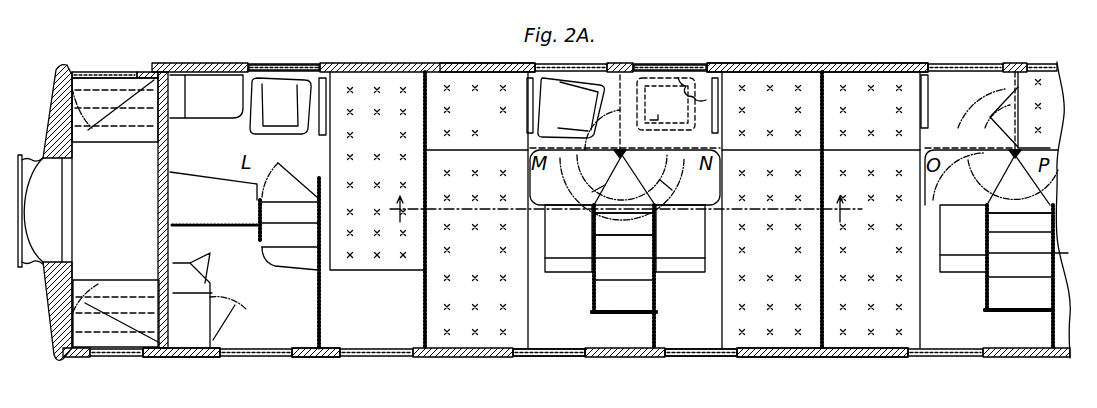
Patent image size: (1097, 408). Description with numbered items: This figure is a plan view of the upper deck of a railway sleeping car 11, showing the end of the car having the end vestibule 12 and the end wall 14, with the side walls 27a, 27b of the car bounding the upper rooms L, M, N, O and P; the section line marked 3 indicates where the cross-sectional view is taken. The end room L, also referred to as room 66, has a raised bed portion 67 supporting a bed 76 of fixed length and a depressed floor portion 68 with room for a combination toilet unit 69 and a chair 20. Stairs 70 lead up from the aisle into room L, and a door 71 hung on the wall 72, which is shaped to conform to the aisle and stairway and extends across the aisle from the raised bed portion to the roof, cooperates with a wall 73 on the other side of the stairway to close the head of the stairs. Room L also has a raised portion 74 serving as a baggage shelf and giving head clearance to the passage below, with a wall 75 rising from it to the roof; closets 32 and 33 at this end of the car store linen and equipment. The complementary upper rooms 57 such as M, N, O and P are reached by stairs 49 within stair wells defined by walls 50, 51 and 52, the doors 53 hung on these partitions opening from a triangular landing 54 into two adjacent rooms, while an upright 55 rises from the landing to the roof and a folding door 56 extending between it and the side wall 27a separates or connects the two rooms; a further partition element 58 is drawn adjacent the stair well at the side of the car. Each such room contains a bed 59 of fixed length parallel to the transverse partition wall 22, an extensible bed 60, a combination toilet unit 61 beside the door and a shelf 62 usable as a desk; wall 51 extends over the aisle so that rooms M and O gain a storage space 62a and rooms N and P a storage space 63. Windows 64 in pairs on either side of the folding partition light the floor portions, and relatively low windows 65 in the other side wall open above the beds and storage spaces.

The car 11 is at (435, 58).
The end vestibule 12 is at (116, 212).
The end wall 14 is at (160, 165).
The chair 20 is at (654, 64).
The transverse partition wall 22 is at (425, 172).
The left side wall 27a is at (812, 62).
The right side wall 27b is at (853, 386).
The closet 32 is at (180, 275).
The closet 33 is at (188, 338).
The stairs 49 is at (640, 243).
The stair well wall 50 is at (594, 228).
The stair well wall 51 is at (656, 222).
The stair well wall 52 is at (615, 313).
The door 53 is at (592, 192).
The stair landing 54 is at (1008, 172).
The upright 55 is at (630, 150).
The folding door 56 is at (607, 150).
The upper room 57 is at (530, 70).
The partition panel 58 is at (704, 78).
The bed of fixed length 59 is at (673, 253).
The extensible bed 60 is at (673, 111).
The combination toilet unit 61 is at (566, 250).
The leaf or shelf 62 is at (527, 125).
The storage space 62a is at (766, 311).
The storage space 63 is at (690, 302).
The window 64 is at (287, 63).
The low window 65 is at (540, 357).
The room 66 is at (313, 78).
The raised bed portion 67 is at (378, 322).
The depressed floor portion 68 is at (223, 135).
The combination toilet unit 69 is at (197, 80).
The stairs 70 is at (283, 253).
The door 71 is at (298, 180).
The wall or partition 72 is at (322, 298).
The wall 73 is at (253, 218).
The raised portion 74 is at (213, 192).
The wall 75 is at (205, 228).
The bed of fixed length 76 is at (377, 171).
The section line 3- 3 is at (398, 210).